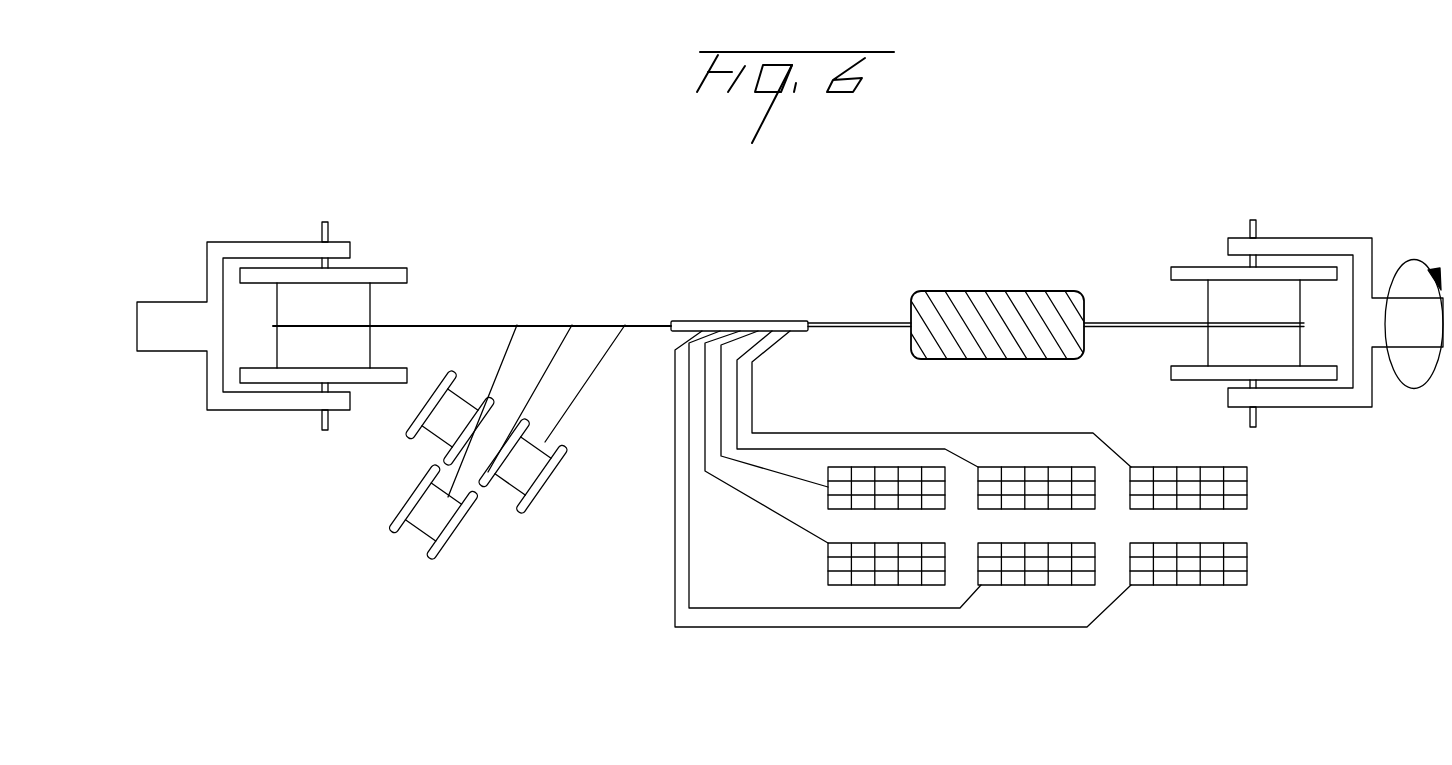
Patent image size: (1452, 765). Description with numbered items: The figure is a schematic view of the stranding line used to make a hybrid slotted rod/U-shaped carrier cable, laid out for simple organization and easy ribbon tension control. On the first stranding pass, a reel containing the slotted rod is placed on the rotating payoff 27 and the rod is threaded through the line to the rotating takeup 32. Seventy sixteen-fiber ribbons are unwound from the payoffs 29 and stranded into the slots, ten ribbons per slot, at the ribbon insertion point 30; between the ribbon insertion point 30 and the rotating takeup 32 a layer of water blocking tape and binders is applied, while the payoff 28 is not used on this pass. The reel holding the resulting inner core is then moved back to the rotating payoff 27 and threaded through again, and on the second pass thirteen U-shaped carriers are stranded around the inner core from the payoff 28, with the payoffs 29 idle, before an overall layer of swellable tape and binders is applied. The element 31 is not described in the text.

The rotating payoff 27 is at (272, 245).
The payoff 28 is at (430, 503).
The payoffs 29 is at (1222, 482).
The ribbon insertion point 30 is at (740, 320).
The magnetizing element 31 is at (996, 293).
The rotating takeup 32 is at (1310, 243).